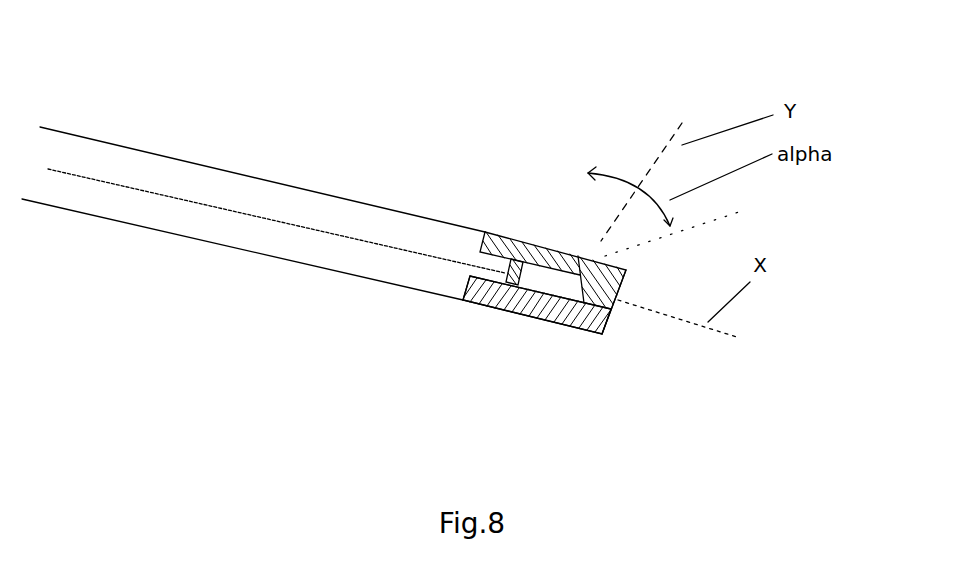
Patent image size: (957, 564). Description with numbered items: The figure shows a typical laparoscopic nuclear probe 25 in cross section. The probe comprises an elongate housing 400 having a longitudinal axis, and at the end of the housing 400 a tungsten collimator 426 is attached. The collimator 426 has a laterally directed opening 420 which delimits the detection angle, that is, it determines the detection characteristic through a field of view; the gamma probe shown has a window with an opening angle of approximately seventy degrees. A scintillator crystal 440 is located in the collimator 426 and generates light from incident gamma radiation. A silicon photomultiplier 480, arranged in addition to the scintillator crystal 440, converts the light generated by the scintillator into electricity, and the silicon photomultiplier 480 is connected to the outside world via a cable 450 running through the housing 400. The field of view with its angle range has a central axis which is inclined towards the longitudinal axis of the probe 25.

The laparoscopic nuclear probe 25 is at (226, 20).
The housing 400 is at (245, 219).
The laterally directed opening 420 is at (582, 258).
The tungsten collimator 426 is at (610, 318).
The scintillator crystal 440 is at (546, 284).
The cable 450 is at (168, 193).
The silicon photomultiplier 480 is at (516, 262).